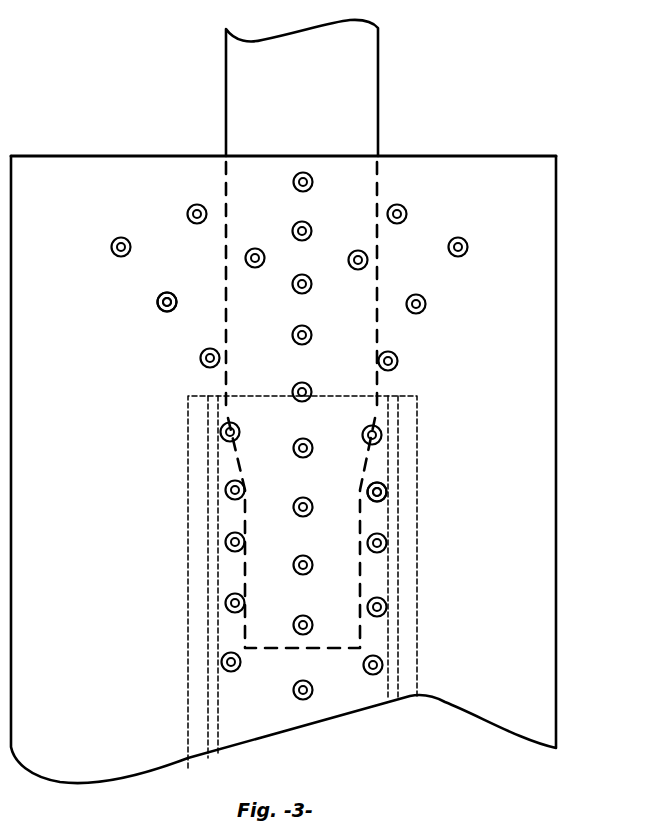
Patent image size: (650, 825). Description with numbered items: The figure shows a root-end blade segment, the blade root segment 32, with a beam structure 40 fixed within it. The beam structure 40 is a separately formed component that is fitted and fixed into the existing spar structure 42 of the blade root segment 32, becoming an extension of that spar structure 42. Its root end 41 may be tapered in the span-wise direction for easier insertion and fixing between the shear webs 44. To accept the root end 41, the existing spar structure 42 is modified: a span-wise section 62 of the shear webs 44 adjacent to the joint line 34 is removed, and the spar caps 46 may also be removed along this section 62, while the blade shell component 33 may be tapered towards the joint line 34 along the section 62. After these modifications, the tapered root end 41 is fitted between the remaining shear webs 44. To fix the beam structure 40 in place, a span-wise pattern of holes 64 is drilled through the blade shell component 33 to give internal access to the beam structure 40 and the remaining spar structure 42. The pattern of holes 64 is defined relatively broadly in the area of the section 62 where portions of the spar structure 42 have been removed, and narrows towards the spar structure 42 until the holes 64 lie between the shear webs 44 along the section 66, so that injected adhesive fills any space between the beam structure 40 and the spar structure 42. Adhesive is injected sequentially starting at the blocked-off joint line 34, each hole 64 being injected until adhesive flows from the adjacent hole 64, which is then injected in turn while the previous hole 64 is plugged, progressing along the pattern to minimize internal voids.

The blade root segment 32 is at (556, 467).
The blade shell component 33 is at (90, 416).
The joint line 34 is at (53, 156).
The beam structure 40 is at (378, 95).
The root end 41 is at (249, 652).
The spar structure 42 is at (440, 628).
The shear webs 44 is at (207, 699).
The spar caps 46 is at (418, 548).
The span-wise section 62 is at (449, 161).
The holes 64 is at (158, 303).
The section 66 is at (163, 398).